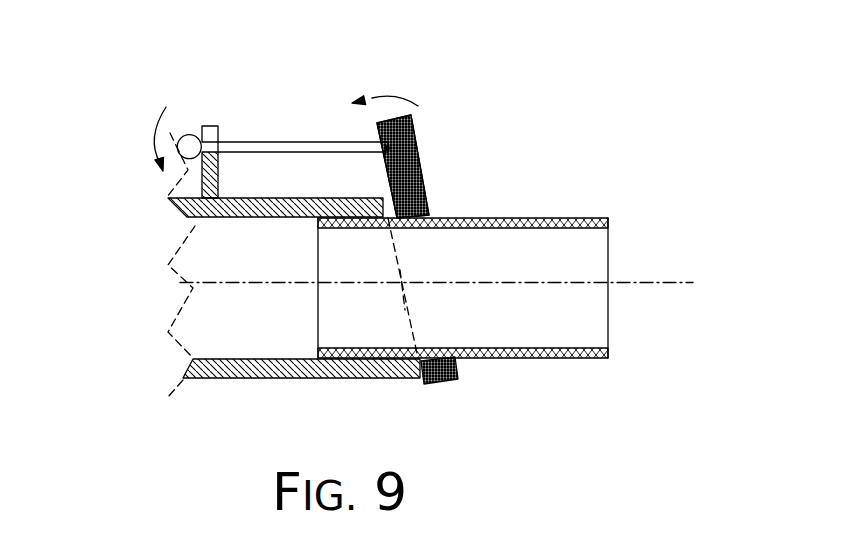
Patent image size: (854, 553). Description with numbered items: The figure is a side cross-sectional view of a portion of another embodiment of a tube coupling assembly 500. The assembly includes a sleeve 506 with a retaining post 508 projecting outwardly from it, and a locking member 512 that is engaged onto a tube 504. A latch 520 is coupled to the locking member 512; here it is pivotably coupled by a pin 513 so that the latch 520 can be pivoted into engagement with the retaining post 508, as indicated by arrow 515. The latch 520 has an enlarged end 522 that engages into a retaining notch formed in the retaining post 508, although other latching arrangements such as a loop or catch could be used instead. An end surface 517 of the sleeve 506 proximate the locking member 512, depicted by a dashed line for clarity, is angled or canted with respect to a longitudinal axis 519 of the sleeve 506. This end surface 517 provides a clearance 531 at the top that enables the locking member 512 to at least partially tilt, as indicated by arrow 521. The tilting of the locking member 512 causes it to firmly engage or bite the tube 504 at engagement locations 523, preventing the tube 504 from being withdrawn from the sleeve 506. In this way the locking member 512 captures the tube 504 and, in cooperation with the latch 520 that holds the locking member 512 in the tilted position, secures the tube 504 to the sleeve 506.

The tube coupling assembly 500 is at (612, 97).
The tube 504 is at (556, 217).
The sleeve 506 is at (308, 378).
The retaining post 508 is at (190, 203).
The locking member 512 is at (420, 165).
The pin 513 is at (390, 146).
The arrow 515 is at (160, 162).
The end surface 517 is at (402, 297).
The longitudinal axis 519 is at (658, 282).
The latch 520 is at (312, 142).
The arrow 521 is at (390, 95).
The enlarged end 522 is at (200, 112).
The engagement locations 523 is at (389, 238).
The clearance 531 is at (380, 185).